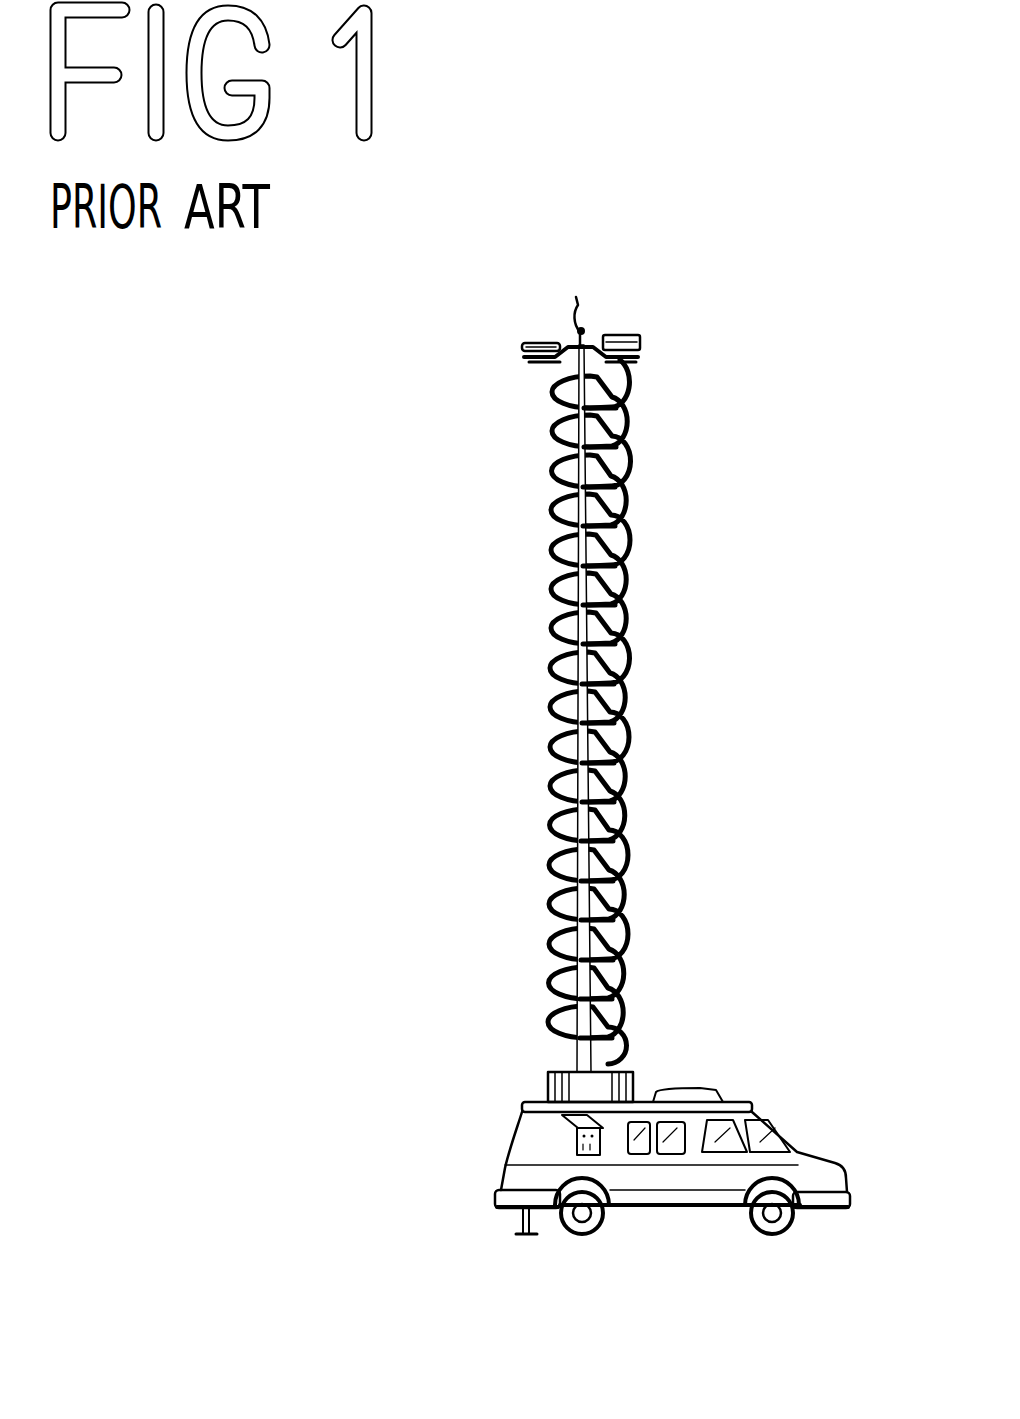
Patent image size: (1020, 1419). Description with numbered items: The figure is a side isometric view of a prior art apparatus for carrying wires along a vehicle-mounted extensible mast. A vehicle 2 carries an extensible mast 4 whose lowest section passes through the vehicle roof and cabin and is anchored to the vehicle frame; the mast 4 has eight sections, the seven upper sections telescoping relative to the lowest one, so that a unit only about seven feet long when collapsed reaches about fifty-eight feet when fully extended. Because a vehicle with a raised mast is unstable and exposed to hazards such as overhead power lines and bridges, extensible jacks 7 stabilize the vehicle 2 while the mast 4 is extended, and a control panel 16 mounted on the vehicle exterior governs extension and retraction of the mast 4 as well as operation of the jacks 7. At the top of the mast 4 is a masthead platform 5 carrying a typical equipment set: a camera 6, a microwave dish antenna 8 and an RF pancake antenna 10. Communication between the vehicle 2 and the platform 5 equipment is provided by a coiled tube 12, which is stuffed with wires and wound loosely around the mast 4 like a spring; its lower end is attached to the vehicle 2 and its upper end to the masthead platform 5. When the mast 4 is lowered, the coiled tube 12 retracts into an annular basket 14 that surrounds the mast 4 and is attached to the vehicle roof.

The vehicle 2 is at (808, 1167).
The extensible mast 4 is at (613, 888).
The masthead platform 5 is at (634, 362).
The camera 6 is at (632, 335).
The extensible jacks 7 is at (515, 1218).
The microwave dish antenna 8 is at (580, 325).
The RF pancake antenna 10 is at (534, 344).
The coiled tube 12 is at (632, 497).
The basket 14 is at (546, 1081).
The control panel 16 is at (603, 1140).